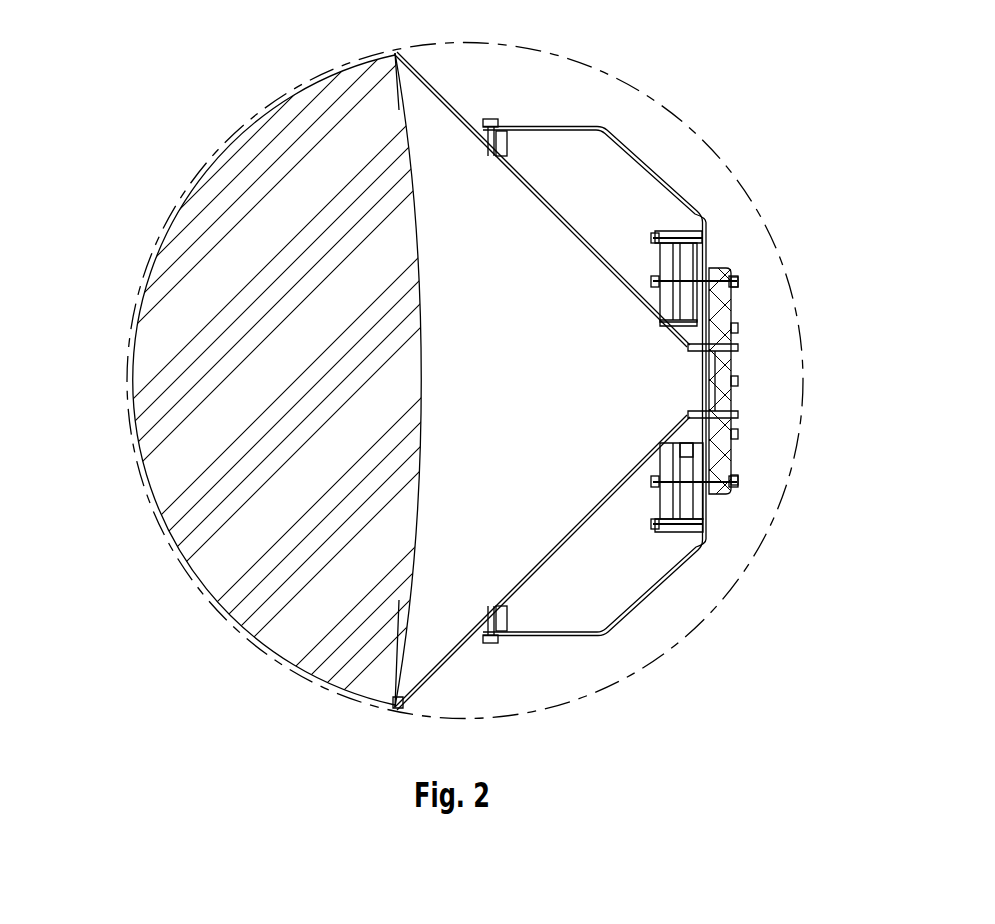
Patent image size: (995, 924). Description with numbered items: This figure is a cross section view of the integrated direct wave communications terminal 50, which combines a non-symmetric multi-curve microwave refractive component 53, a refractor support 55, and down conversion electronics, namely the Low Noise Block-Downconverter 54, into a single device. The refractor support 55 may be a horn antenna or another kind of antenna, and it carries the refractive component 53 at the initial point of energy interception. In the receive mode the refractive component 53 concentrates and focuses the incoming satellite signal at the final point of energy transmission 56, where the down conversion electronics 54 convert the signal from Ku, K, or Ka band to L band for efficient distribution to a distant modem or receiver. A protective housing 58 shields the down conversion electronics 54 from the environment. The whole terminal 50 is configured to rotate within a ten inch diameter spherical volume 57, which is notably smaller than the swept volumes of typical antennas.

The integrated direct wave communications terminal 50 is at (497, 369).
The non-symmetric multi-curve microwave refractive component 53 is at (163, 251).
The Low Noise Block-Downconverter (LNB) 54 is at (683, 263).
The refractor support 55 is at (440, 90).
The final point of energy transmission 56 is at (707, 377).
The spherical volume 57 is at (227, 138).
The protective housing 58 is at (647, 153).